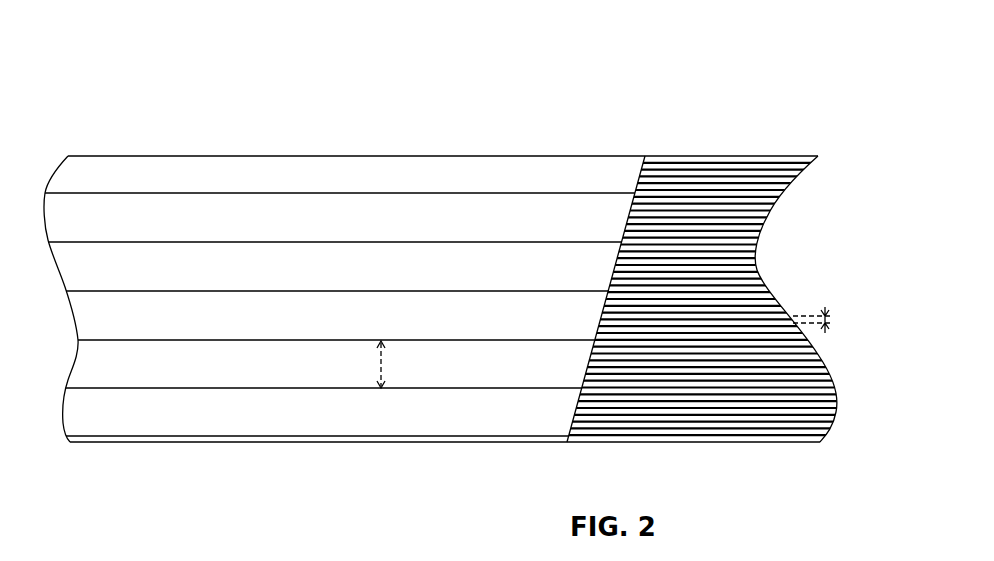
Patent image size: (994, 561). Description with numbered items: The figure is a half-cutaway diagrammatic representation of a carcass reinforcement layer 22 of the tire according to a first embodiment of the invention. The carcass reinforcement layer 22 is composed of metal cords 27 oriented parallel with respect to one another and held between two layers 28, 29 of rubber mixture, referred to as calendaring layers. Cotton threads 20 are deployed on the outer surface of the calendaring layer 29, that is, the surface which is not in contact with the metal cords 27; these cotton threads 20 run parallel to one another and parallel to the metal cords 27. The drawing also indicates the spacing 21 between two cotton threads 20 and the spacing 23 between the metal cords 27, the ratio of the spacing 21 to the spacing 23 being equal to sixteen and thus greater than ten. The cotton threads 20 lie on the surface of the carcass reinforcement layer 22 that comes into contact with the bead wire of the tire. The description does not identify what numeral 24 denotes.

The cotton threads 20 is at (145, 193).
The spacing between two cotton threads 21 is at (382, 357).
The carcass reinforcement layer 22 is at (455, 282).
The spacing between the metal cords 23 is at (828, 325).
The layer 24 is at (275, 303).
The metal cords 27 is at (765, 212).
The calendaring layer 28 is at (749, 165).
The calendaring layer 29 is at (580, 183).